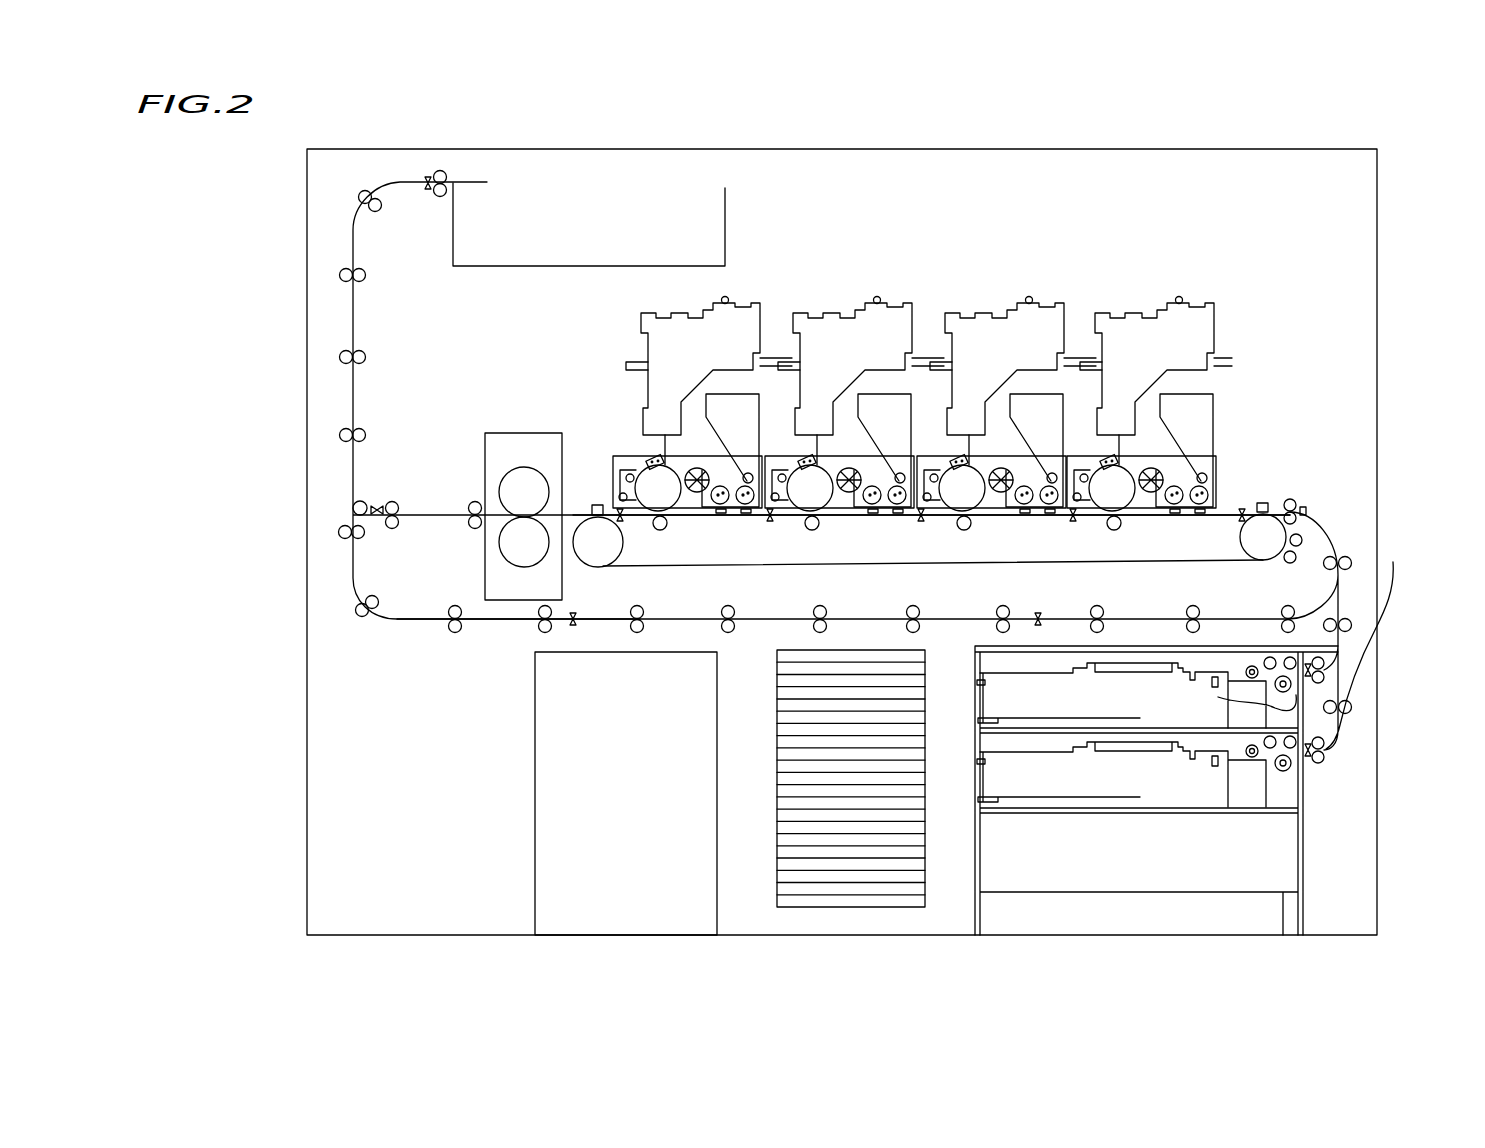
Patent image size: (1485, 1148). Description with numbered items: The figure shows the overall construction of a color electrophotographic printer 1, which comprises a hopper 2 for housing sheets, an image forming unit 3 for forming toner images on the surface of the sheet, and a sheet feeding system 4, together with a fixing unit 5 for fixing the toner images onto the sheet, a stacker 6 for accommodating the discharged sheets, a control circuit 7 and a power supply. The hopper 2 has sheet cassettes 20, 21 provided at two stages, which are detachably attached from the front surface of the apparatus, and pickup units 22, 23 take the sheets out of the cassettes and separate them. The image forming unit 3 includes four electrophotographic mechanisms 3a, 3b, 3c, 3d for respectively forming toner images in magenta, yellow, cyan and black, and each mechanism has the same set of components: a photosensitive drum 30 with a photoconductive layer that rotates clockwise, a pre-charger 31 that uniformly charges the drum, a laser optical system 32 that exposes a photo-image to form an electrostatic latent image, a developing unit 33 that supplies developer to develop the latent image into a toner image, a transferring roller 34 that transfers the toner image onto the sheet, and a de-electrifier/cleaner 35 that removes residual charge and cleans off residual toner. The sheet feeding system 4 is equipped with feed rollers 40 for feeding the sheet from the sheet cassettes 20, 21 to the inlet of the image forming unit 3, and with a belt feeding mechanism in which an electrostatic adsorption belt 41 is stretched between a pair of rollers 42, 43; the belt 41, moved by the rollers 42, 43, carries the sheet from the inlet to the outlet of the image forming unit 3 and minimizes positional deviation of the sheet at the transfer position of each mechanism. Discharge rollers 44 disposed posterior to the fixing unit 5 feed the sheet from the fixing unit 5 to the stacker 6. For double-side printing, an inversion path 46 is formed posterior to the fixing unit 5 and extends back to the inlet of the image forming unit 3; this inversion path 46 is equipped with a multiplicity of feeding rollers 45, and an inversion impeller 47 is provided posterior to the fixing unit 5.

The color electrophotographic printer 1 is at (1388, 167).
The hopper 2 is at (1187, 790).
The image forming unit 3 is at (960, 378).
The electrophotographic mechanism 3a is at (1178, 397).
The electrophotographic mechanism 3b is at (953, 281).
The electrophotographic mechanism 3c is at (851, 281).
The electrophotographic mechanism 3d is at (745, 281).
The sheet feeding system 4 is at (329, 391).
The fixing unit 5 is at (515, 455).
The stacker 6 is at (718, 207).
The control circuit 7 is at (780, 802).
The sheet cassette 20 is at (997, 795).
The sheet cassette 21 is at (997, 705).
The pickup unit 22 is at (1290, 760).
The pickup unit 23 is at (1290, 693).
The photosensitive drum 30 is at (1135, 444).
The pre-charger 31 is at (1072, 435).
The laser optical system 32 is at (1190, 381).
The developing unit 33 is at (1223, 453).
The transferring roller 34 is at (1146, 511).
The de-electrifier/cleaner 35 is at (1067, 524).
The feed rollers 40 is at (1295, 505).
The electrostatic adsorption belt 41 is at (1103, 565).
The roller 42 is at (1262, 540).
The roller 43 is at (597, 552).
The discharge rollers 44 is at (360, 430).
The feeding rollers 45 is at (448, 633).
The inversion path 46 is at (493, 623).
The inversion impeller 47 is at (360, 502).